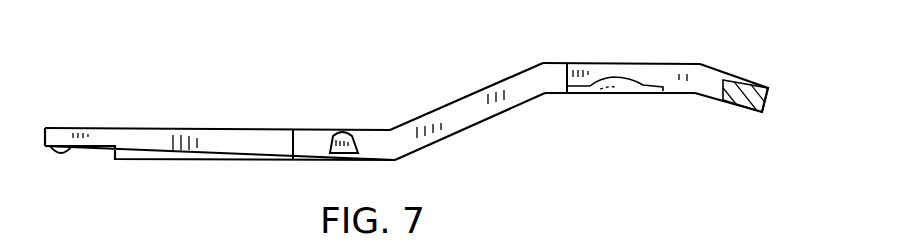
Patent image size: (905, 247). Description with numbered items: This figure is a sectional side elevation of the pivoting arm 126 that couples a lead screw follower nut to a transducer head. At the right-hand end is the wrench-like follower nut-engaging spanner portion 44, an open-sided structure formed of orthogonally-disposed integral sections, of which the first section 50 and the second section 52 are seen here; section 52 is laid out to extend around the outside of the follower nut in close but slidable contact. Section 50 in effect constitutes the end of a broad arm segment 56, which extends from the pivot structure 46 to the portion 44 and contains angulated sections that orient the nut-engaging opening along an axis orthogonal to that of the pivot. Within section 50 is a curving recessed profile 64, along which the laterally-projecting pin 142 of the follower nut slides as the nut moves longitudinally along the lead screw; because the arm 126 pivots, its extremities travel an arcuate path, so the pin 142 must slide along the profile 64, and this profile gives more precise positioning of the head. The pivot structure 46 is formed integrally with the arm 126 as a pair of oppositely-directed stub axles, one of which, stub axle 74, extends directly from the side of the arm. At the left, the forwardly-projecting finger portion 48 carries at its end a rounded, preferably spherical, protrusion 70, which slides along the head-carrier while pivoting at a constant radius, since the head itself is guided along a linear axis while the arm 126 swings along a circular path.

The follower nut-engaging portion 44 is at (632, 48).
The pivot structure 46 is at (343, 126).
The forwardly-projecting finger portion 48 is at (106, 124).
The first section 50 is at (686, 65).
The second section 52 is at (758, 83).
The broad arm segment 56 is at (485, 111).
The curving recessed profile 64 is at (640, 87).
The rounded protrusion 70 is at (62, 152).
The stub axle 74 is at (355, 132).
The arm 126 is at (268, 110).
The laterally-projecting pin 142 is at (587, 98).